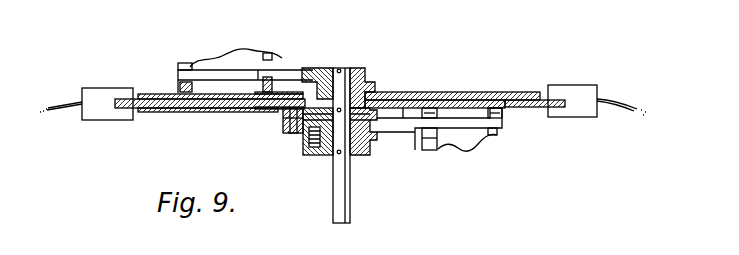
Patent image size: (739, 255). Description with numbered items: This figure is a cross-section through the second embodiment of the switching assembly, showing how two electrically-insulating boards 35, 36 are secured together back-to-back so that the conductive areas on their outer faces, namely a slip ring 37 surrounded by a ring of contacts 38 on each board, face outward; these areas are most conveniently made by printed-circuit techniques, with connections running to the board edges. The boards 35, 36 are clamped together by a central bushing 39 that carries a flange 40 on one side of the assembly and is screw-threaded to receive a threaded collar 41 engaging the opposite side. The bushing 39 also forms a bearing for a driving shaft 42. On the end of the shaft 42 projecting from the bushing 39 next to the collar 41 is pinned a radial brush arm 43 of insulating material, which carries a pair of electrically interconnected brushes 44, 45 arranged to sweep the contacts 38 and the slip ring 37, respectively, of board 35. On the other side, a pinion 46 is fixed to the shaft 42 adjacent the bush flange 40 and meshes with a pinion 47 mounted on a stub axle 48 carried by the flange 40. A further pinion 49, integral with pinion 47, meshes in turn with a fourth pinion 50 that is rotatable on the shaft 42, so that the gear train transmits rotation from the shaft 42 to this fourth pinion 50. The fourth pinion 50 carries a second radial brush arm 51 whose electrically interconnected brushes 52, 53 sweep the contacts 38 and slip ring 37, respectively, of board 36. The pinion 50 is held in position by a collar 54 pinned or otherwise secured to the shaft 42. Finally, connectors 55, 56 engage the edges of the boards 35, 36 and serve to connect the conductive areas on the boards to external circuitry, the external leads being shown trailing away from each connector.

The electrically-insulating board 35 is at (145, 91).
The electrically-insulating board 36 is at (155, 110).
The slip ring 37 is at (290, 93).
The ring of contacts 38 is at (163, 94).
The central bushing 39 is at (370, 83).
The flange 40 is at (410, 92).
The threaded collar 41 is at (373, 88).
The driving shaft 42 is at (342, 68).
The radial brush arm 43 is at (313, 70).
The brush 44 is at (203, 81).
The brush 45 is at (257, 83).
The pinion 46 is at (440, 90).
The pinion 47 is at (277, 115).
The stub axle 48 is at (293, 134).
The pinion 49 is at (280, 134).
The fourth pinion 50 is at (383, 125).
The radial brush arm 51 is at (413, 143).
The brush 52 is at (518, 93).
The brush 53 is at (462, 93).
The collar 54 is at (362, 156).
The connector 55 is at (577, 88).
The connector 56 is at (105, 97).